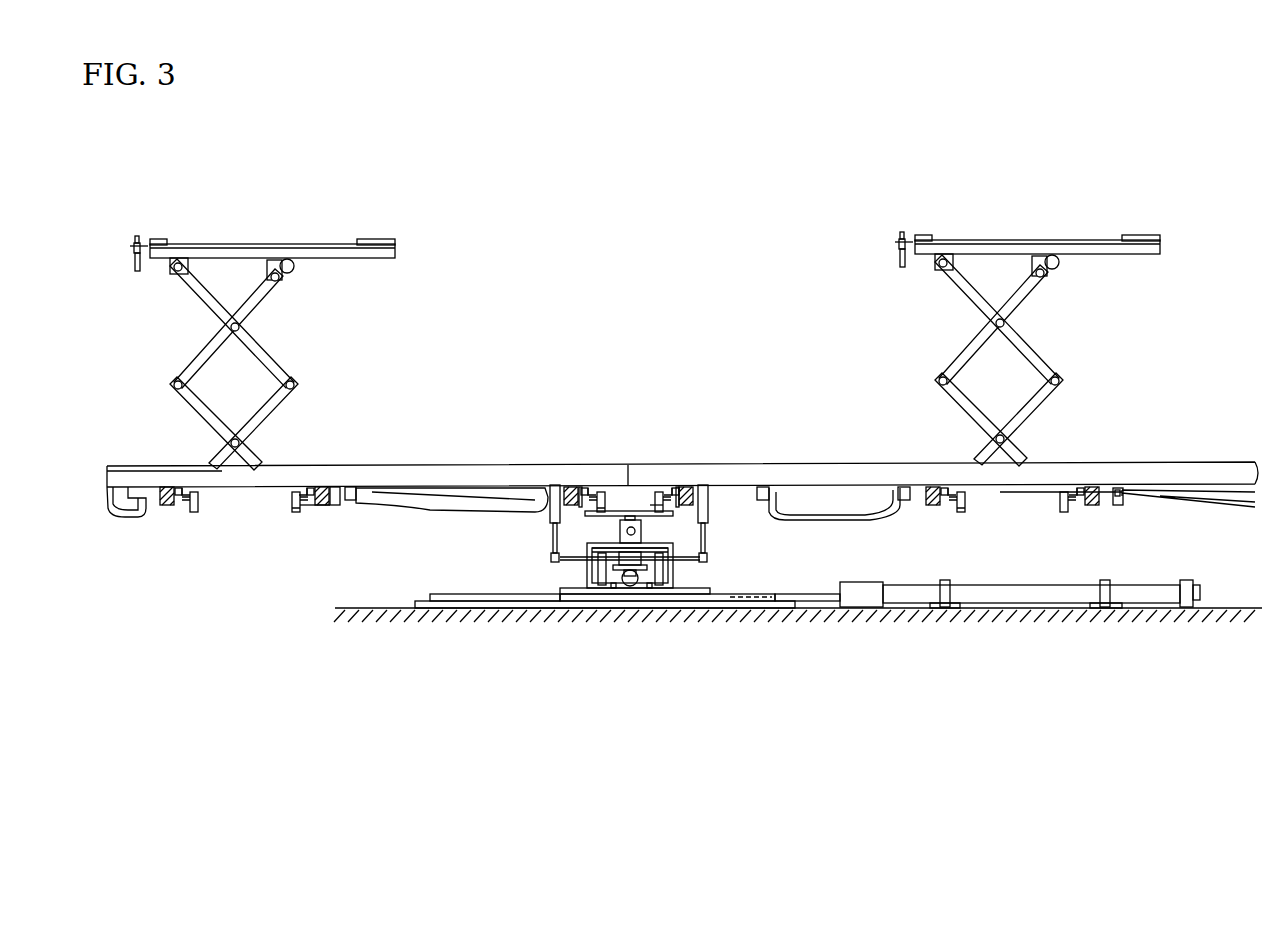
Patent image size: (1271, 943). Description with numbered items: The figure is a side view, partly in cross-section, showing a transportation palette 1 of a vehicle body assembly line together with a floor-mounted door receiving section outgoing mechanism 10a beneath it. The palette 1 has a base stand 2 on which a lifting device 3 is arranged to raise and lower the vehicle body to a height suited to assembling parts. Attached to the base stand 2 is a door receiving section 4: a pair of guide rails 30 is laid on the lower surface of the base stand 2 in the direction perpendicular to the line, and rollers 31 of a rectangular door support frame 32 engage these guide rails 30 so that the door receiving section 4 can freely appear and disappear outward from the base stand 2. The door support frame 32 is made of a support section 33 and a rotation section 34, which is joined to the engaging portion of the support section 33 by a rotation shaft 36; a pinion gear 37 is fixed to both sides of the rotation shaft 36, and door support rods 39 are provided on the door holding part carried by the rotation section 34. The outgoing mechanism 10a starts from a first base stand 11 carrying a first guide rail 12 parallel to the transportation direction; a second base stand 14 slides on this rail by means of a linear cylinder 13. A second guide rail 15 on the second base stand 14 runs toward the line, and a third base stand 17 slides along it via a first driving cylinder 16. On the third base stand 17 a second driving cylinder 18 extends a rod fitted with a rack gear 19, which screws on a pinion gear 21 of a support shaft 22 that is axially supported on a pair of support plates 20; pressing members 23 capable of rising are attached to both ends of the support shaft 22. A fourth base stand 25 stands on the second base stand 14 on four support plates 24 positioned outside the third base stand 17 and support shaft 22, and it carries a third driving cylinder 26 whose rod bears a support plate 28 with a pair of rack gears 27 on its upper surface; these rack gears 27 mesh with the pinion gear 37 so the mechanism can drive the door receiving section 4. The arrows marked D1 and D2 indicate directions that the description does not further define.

The transportation palette 1 is at (486, 378).
The base stand 2 is at (427, 466).
The lifting device 3 is at (166, 330).
The door receiving section 4 is at (342, 532).
The door receiving section outgoing mechanism 10a is at (460, 652).
The first base stand 11 is at (745, 608).
The first guide rail 12 is at (438, 601).
The linear cylinder 13 is at (1028, 588).
The second base stand 14 is at (690, 596).
The second guide rail 15 is at (622, 588).
The first driving cylinder 16 is at (645, 588).
The third base stand 17 is at (612, 588).
The second driving cylinder 18 is at (630, 588).
The rack gear 19 is at (656, 588).
The support plates 20 is at (673, 566).
The pinion gear 21 is at (668, 548).
The support shaft 22 is at (580, 572).
The pressing members 23 is at (553, 486).
The support plates 24 is at (560, 600).
The fourth base stand 25 is at (590, 546).
The third driving cylinder 26 is at (641, 531).
The rack gears 27 is at (605, 490).
The support plate 28 is at (628, 510).
The guide rails 30 is at (190, 487).
The rollers 31 is at (176, 488).
The door support frame 32 is at (156, 532).
The support section 33 is at (334, 505).
The rotation section 34 is at (320, 506).
The rotation shaft 36 is at (296, 510).
The pinion gear 37 is at (655, 490).
The door support rods 39 is at (1123, 506).
The direction D1 is at (122, 520).
The direction D2 is at (455, 502).